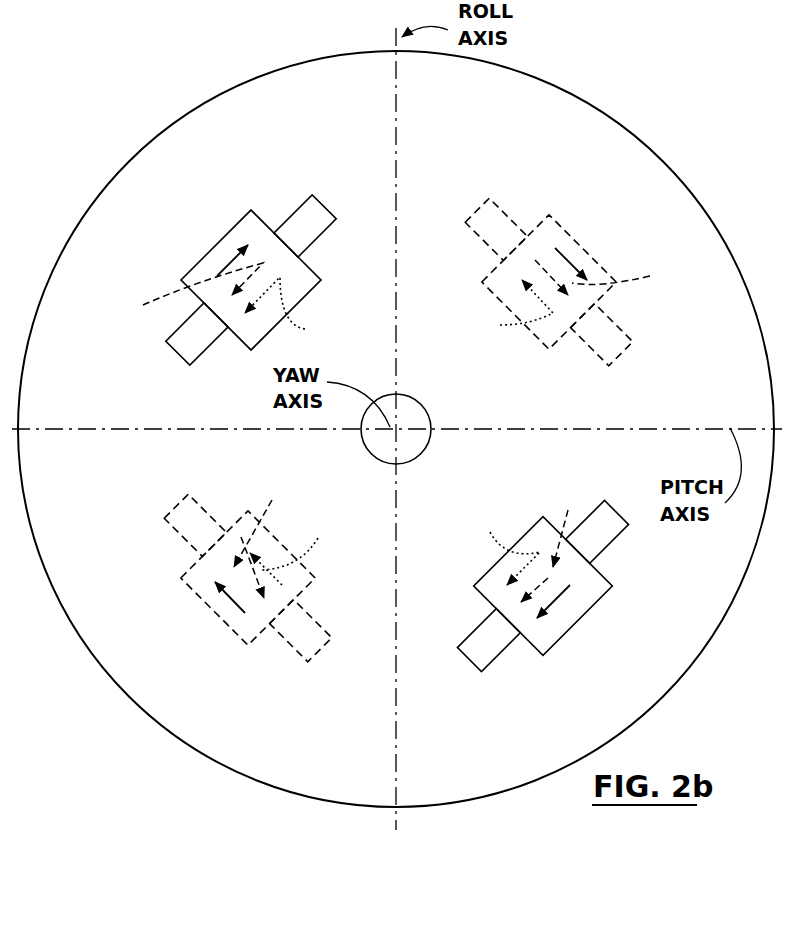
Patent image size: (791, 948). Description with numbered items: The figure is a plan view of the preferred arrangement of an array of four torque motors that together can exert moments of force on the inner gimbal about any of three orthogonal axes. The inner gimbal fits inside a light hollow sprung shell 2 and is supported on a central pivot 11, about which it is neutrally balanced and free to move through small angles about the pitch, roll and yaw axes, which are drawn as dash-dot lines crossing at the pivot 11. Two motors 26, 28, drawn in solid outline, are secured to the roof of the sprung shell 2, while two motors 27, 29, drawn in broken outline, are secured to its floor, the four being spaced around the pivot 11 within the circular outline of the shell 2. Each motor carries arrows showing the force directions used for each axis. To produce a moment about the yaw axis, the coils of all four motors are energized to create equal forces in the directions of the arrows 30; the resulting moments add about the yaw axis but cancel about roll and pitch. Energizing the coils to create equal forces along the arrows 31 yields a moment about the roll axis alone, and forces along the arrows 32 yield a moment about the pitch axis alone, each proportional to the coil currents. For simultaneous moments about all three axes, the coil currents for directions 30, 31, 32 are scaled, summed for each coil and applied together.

The sprung shell 2 is at (538, 80).
The central pivot 11 is at (402, 427).
The torque motor 26 is at (265, 230).
The torque motor 27 is at (552, 220).
The torque motor 28 is at (593, 590).
The torque motor 29 is at (307, 593).
The arrows indicating yaw force directions 30 is at (232, 257).
The arrows indicating roll force directions 31 is at (400, 431).
The arrows indicating pitch force directions 32 is at (399, 431).